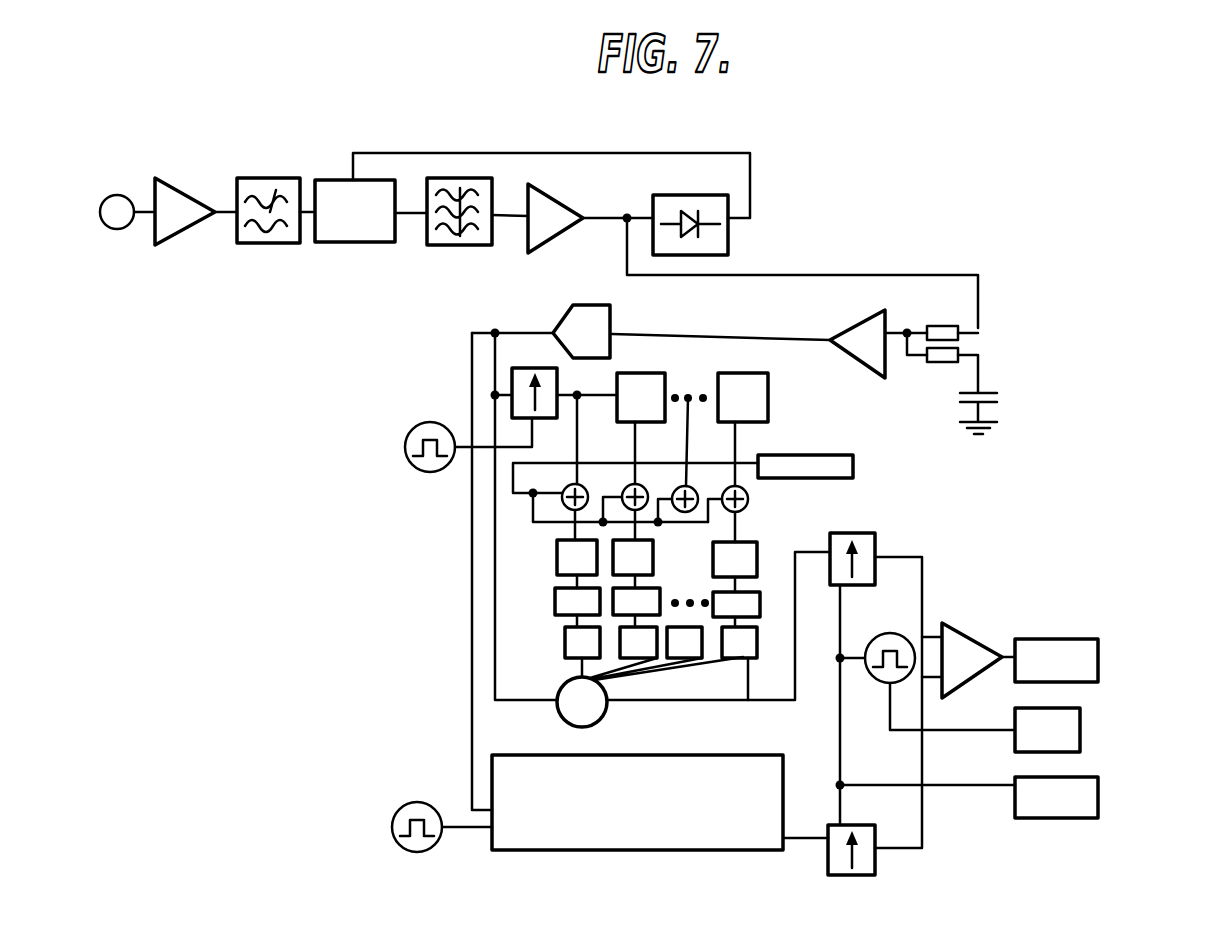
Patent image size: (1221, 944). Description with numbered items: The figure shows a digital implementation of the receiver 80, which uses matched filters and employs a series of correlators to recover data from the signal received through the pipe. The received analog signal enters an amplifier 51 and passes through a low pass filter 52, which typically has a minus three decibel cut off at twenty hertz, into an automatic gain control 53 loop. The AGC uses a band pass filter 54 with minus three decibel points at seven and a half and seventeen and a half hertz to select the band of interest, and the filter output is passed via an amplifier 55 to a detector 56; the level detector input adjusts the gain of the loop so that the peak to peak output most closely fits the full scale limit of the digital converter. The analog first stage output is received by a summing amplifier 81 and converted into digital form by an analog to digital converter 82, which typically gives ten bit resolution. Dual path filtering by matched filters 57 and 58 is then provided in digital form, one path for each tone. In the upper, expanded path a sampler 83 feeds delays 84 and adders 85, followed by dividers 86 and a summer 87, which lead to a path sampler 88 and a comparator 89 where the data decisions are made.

The amplifier 51 is at (173, 195).
The low pass filter 52 is at (253, 183).
The automatic gain control 53 is at (333, 187).
The band pass filter 54 is at (457, 187).
The amplifier 55 is at (548, 203).
The detector 56 is at (712, 200).
The matched filter 57 is at (490, 513).
The matched filter 58 is at (623, 832).
The digital receiver 80 is at (1085, 423).
The summing amplifier 81 is at (873, 370).
The analog to digital converter 82 is at (577, 315).
The sampler 83 is at (517, 380).
The delays 84 is at (757, 407).
The adders 85 is at (748, 505).
The dividers 86 is at (748, 700).
The summer 87 is at (590, 710).
The path sampler 88 is at (867, 547).
The comparator 89 is at (962, 647).